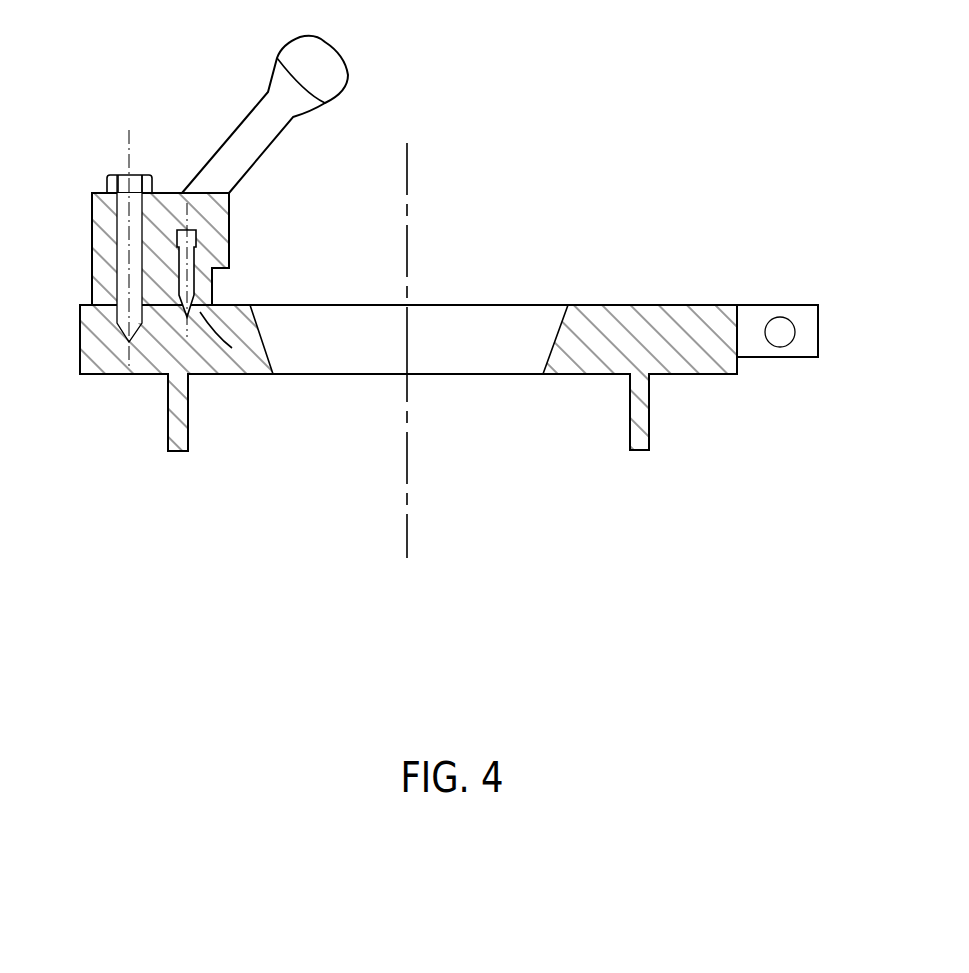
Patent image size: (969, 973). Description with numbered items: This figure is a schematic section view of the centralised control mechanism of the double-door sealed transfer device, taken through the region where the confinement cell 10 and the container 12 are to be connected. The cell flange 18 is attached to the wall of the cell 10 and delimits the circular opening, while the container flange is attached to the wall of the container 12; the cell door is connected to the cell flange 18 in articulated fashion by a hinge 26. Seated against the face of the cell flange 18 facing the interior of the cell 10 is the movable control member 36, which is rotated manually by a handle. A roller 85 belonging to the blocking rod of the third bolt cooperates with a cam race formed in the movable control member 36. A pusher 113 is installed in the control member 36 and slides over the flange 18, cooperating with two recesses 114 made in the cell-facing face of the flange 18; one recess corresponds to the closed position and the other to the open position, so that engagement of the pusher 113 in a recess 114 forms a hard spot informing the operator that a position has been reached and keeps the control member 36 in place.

The confinement cell 10 is at (441, 246).
The container 12 is at (441, 454).
The cell flange 18 is at (658, 258).
The hinge 26 is at (823, 297).
The movable control member 36 is at (97, 123).
The roller 85 is at (222, 269).
The pusher 113 is at (192, 302).
The recesses 114 is at (217, 345).